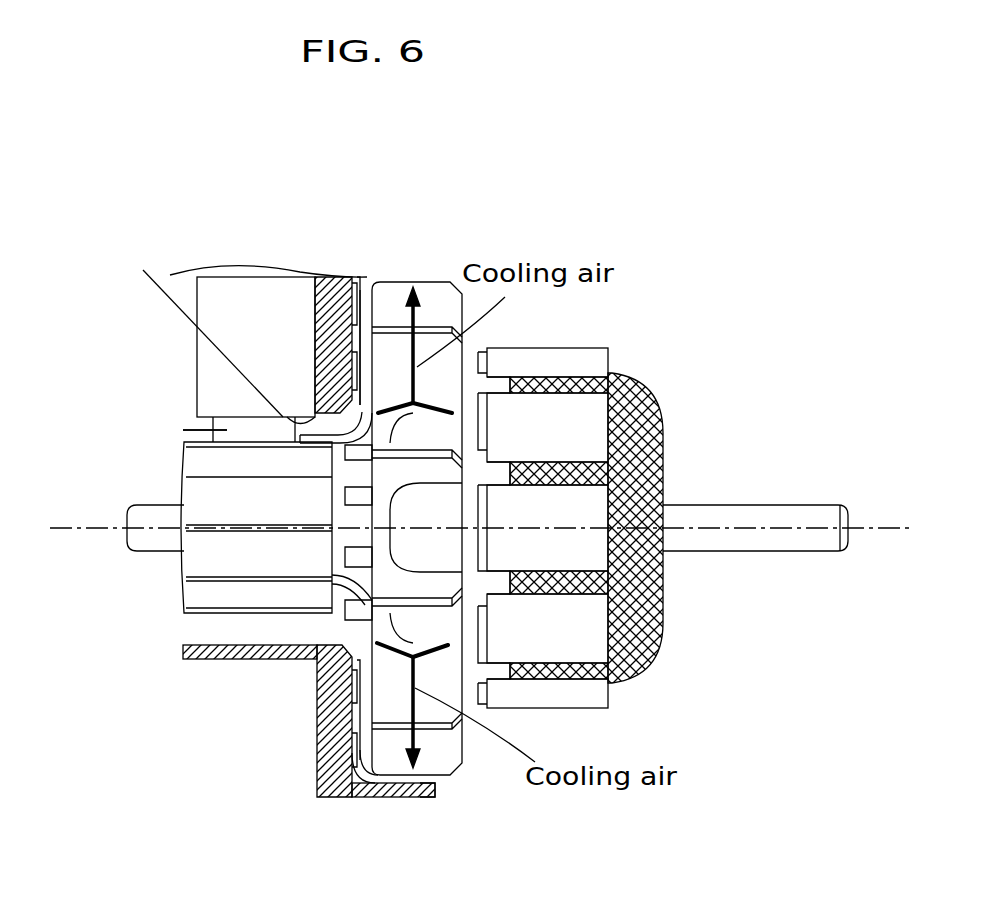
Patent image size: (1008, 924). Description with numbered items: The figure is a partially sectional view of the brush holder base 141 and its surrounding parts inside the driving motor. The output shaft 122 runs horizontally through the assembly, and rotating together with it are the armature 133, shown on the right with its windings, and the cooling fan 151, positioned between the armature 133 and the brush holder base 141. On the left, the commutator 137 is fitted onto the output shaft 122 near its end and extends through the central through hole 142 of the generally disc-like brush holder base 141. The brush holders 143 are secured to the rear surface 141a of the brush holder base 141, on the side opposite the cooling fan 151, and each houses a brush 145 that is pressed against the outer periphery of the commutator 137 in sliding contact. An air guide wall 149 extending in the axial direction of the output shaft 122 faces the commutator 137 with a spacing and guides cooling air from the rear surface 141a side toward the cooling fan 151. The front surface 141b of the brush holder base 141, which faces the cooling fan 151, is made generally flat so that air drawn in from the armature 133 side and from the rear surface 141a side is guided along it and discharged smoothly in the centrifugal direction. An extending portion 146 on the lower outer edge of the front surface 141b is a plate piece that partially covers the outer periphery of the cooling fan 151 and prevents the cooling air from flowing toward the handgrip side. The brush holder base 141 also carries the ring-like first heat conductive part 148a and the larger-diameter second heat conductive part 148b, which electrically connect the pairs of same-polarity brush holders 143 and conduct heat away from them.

The output shaft 122 is at (150, 545).
The armature 133 is at (600, 348).
The commutator 137 is at (188, 619).
The brush holder base 141 is at (316, 688).
The rear surface 141a is at (352, 750).
The front surface 141b is at (365, 292).
The through hole 142 is at (199, 327).
The brush holder 143 is at (197, 376).
The brush 145 is at (205, 432).
The extending portion 146 is at (427, 797).
The first heat conductive part 148a is at (340, 380).
The second heat conductive part 148b is at (353, 278).
The air guide wall 149 is at (215, 662).
The cooling fan 151 is at (428, 282).